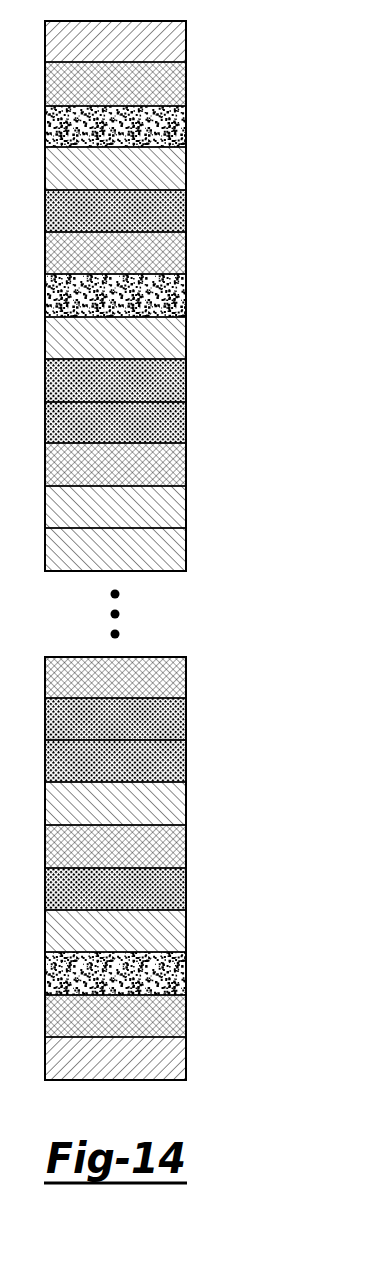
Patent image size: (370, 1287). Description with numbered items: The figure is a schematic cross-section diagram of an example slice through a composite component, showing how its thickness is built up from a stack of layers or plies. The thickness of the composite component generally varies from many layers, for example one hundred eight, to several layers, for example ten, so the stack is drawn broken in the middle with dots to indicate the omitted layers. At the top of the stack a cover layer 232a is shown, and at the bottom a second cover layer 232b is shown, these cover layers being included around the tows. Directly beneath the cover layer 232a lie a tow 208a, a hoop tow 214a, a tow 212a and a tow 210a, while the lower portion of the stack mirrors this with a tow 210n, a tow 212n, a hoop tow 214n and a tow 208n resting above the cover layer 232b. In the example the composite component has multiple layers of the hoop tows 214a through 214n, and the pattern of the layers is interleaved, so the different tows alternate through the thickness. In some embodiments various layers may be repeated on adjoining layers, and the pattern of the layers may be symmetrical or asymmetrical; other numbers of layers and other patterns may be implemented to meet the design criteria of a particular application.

The cover layer 232a is at (186, 43).
The tow 208a is at (186, 87).
The hoop tow 214a is at (186, 129).
The tow 212a is at (186, 172).
The tow 210a is at (186, 213).
The tow 210n is at (186, 892).
The tow 212n is at (186, 933).
The hoop tow 214n is at (186, 977).
The tow 208n is at (186, 1018).
The cover layer 232b is at (186, 1061).